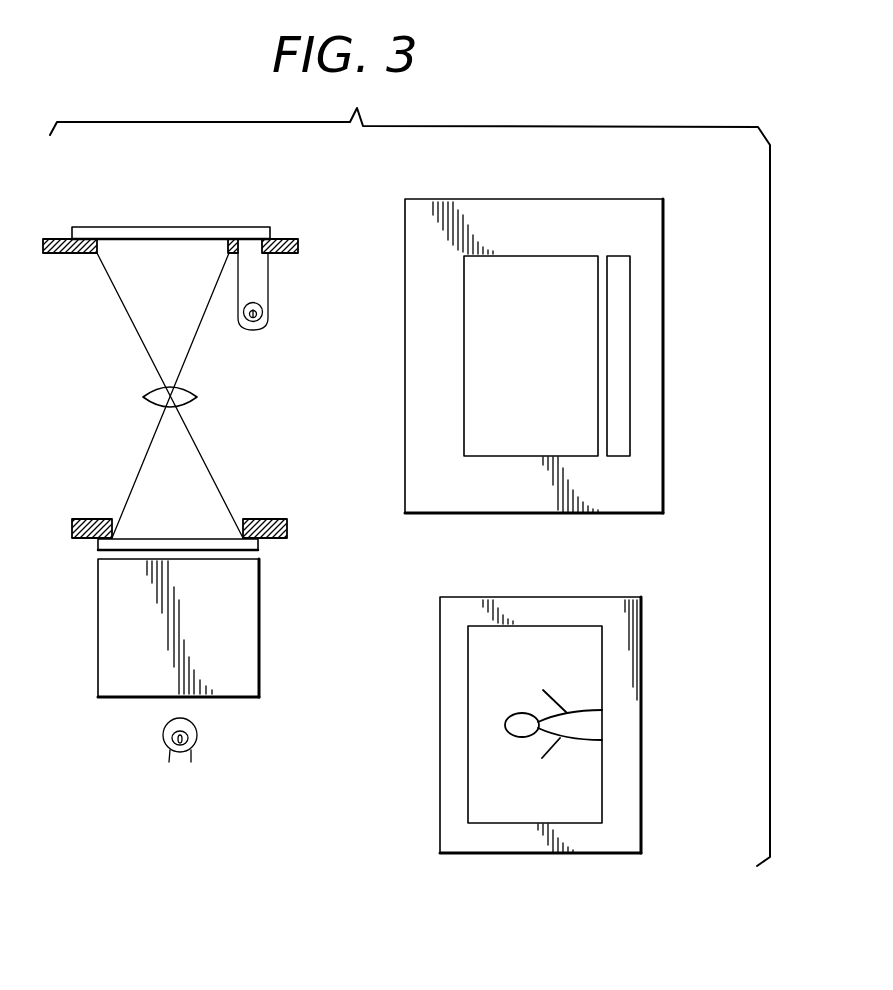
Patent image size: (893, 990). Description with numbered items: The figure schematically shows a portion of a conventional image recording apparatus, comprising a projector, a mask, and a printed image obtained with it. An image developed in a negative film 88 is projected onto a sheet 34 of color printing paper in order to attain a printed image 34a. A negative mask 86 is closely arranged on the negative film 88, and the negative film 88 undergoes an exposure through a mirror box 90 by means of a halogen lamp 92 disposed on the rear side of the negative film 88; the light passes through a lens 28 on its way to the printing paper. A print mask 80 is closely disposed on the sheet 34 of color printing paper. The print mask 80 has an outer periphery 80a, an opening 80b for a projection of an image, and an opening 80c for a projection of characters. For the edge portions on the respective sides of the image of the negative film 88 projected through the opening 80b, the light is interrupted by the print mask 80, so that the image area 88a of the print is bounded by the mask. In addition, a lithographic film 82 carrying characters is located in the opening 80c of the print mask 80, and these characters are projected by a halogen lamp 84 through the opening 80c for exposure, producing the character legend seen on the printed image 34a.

The lens 28 is at (190, 402).
The sheet of color printing paper 34 is at (165, 226).
The printed image 34a is at (640, 692).
The print mask 80 is at (43, 253).
The outer periphery 80a is at (618, 199).
The opening for a projection of an image 80b is at (517, 257).
The opening for a projection of characters 80c is at (629, 313).
The lithographic film 82 is at (250, 245).
The halogen lamp 84 is at (252, 323).
The negative mask 86 is at (85, 518).
The negative film 88 is at (98, 544).
The image area 88a is at (535, 625).
The mirror box 90 is at (260, 667).
The halogen lamp 92 is at (197, 740).